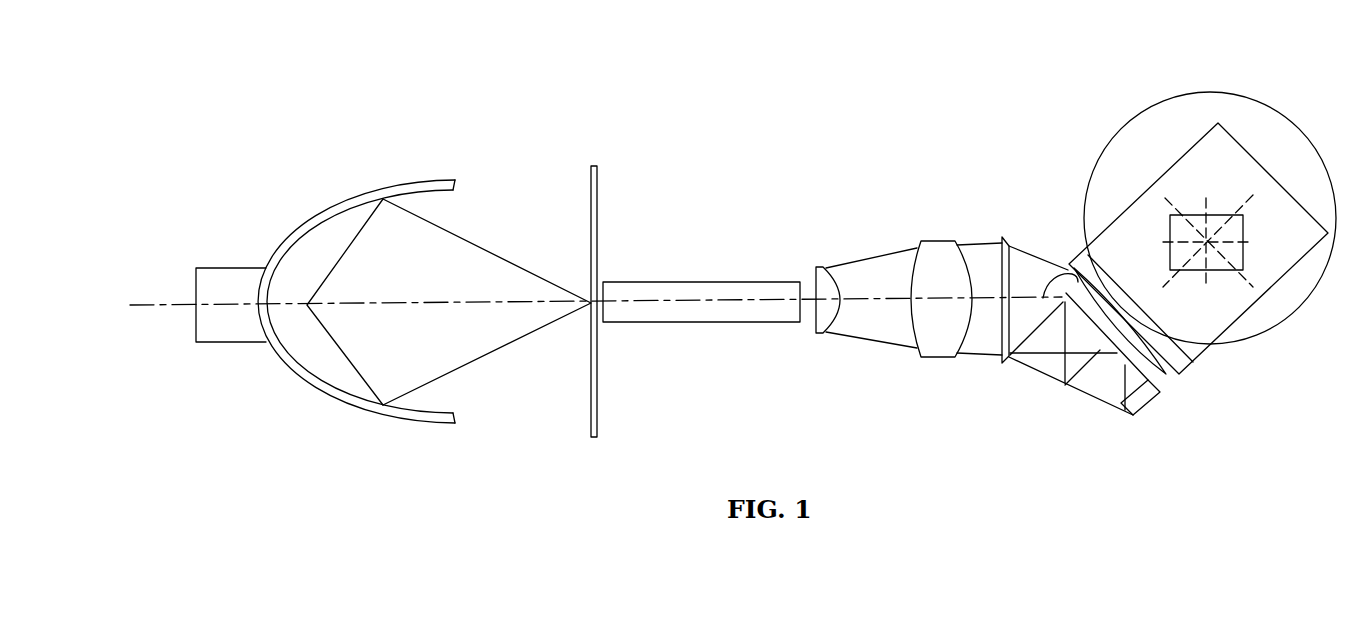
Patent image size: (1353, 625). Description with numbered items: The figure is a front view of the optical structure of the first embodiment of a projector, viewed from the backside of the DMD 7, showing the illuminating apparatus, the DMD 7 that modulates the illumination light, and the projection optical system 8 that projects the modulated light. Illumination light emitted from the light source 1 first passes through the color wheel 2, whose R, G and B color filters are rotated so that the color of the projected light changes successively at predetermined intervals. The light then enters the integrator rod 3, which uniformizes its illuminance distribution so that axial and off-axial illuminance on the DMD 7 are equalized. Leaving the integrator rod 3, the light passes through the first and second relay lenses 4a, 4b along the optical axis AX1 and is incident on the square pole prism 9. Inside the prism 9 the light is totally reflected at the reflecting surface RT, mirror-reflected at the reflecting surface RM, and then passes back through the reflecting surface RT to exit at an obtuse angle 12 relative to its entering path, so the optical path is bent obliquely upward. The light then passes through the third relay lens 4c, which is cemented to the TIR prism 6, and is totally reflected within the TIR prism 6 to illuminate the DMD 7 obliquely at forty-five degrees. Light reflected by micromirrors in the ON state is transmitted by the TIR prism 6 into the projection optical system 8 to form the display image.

The light source 1 is at (338, 202).
The color wheel 2 is at (594, 166).
The integrator rod 3 is at (700, 282).
The first relay lens 4a is at (818, 267).
The second relay lens 4b is at (940, 241).
The third relay lens 4c is at (1168, 377).
The reflecting surface RT is at (1004, 237).
The reflecting surface RM is at (1040, 372).
The obtuse angle 12 is at (1070, 270).
The TIR prism 6 is at (1113, 228).
The DMD 7 is at (1222, 272).
The projection optical system 8 is at (1147, 109).
The prism 9 is at (1148, 405).
The optical axis AX1 is at (877, 303).